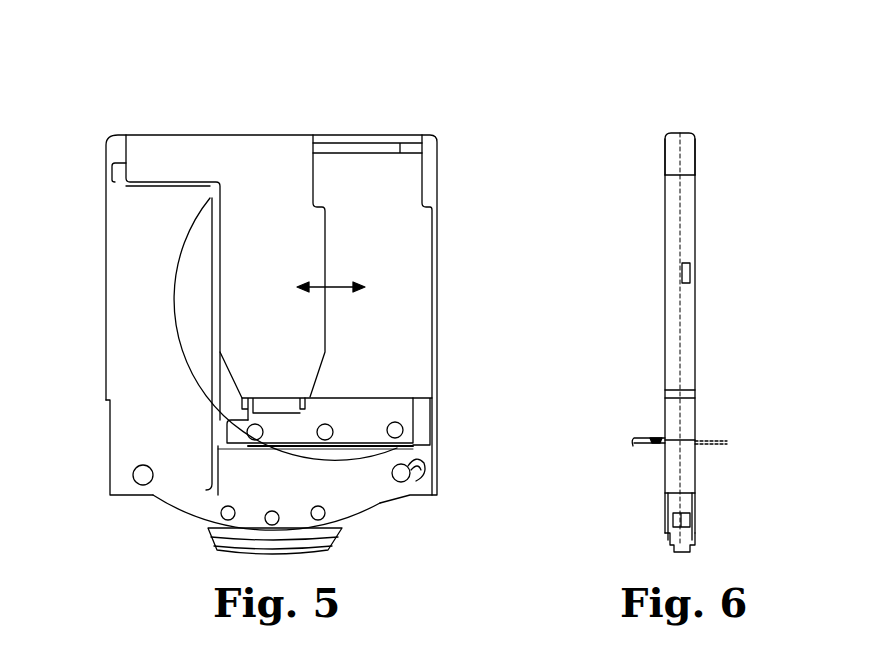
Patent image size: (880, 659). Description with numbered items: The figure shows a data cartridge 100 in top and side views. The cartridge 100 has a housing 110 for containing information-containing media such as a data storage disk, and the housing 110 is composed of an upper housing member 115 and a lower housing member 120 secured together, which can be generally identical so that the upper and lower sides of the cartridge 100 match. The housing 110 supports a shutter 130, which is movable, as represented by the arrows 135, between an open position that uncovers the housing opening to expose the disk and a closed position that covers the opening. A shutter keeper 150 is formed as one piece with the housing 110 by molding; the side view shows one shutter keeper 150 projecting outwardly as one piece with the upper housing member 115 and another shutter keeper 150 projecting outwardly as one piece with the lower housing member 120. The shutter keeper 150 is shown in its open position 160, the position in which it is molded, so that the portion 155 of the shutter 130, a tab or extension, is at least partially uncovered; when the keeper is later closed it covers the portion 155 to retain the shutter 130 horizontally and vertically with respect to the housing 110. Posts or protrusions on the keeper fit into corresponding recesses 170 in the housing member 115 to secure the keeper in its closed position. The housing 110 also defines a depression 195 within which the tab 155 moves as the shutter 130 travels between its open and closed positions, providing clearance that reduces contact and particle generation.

In FIG. 5, the cartridge 100 is at (170, 88).
In FIG. 6, the cartridge 100 is at (607, 60).
In FIG. 5, the housing 110 is at (110, 476).
In FIG. 6, the housing 110 is at (679, 128).
In FIG. 5, the upper housing member 115 is at (128, 447).
In FIG. 6, the upper housing member 115 is at (672, 155).
In FIG. 6, the lower housing member 120 is at (688, 155).
In FIG. 5, the shutter 130 is at (305, 247).
In FIG. 5, the arrows 135 is at (338, 287).
In FIG. 5, the shutter keeper 150 is at (425, 455).
In FIG. 6, the shutter keeper 150 is at (636, 438).
In FIG. 5, the portion of shutter 155 is at (298, 397).
In FIG. 5, the open position 160 is at (300, 448).
In FIG. 6, the open position 160 is at (652, 446).
In FIG. 5, the recesses 170 is at (330, 418).
In FIG. 5, the depression 195 is at (378, 403).